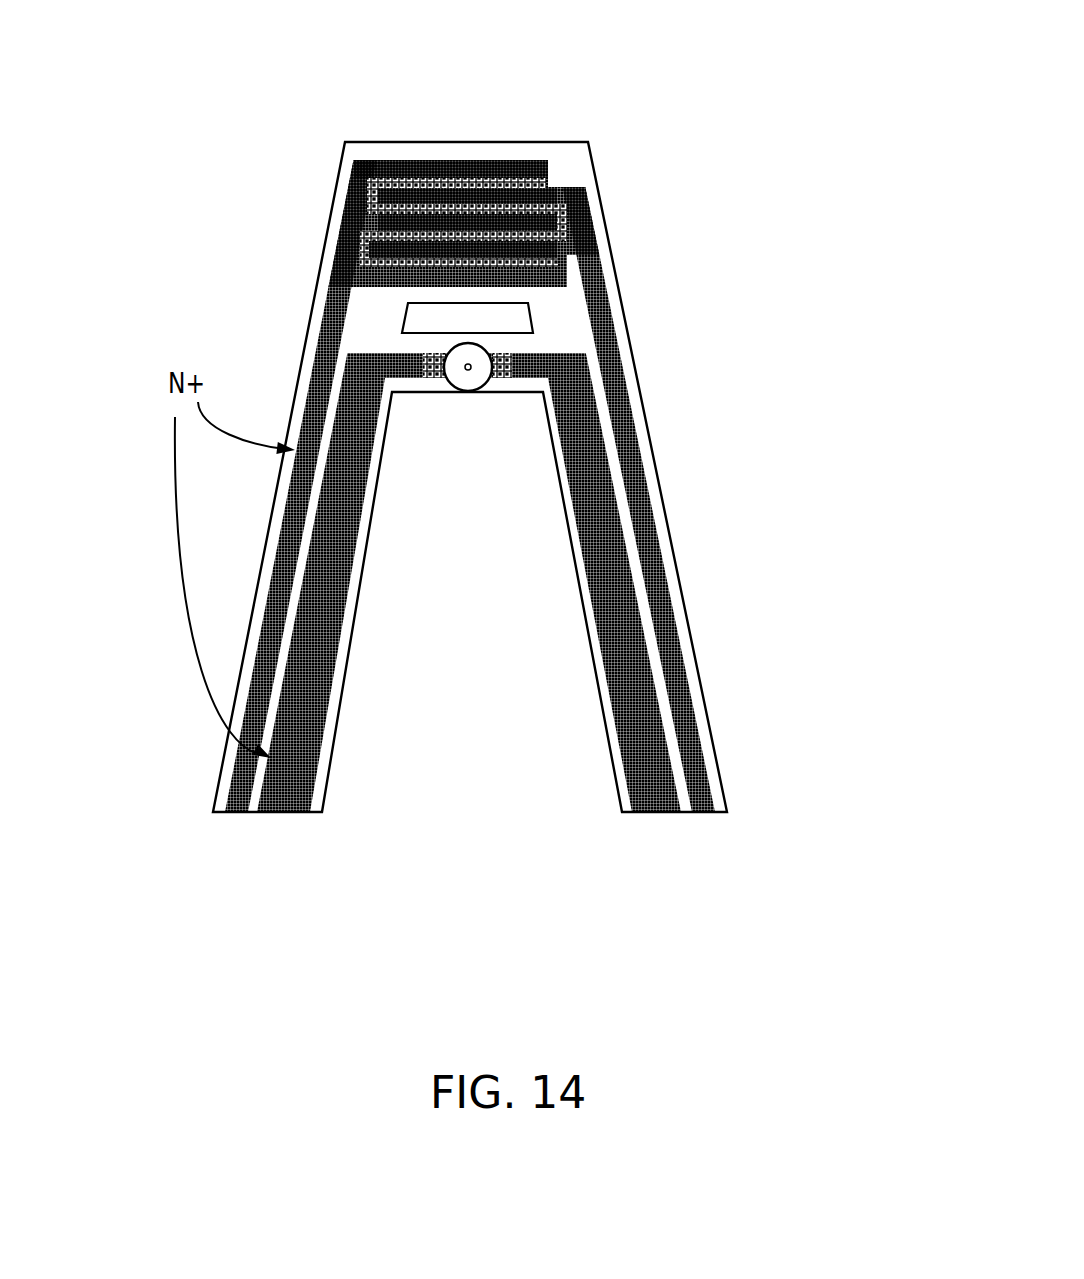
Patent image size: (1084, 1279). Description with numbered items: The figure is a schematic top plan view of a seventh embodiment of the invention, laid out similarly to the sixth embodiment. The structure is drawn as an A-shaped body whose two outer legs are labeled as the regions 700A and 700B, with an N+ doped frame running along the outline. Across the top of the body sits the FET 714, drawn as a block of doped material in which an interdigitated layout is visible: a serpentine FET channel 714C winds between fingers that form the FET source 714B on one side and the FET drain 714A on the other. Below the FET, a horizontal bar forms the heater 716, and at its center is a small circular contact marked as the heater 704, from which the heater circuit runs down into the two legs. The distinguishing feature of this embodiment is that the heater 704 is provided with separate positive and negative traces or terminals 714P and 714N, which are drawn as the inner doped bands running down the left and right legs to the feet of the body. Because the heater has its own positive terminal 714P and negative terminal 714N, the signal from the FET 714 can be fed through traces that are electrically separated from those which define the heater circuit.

The FET 714 is at (640, 129).
The FET channel 714C is at (372, 196).
The FET source 714B is at (552, 222).
The FET drain 714A is at (358, 251).
The heater 716 is at (508, 348).
The heater 704 is at (465, 378).
The first leg 700A is at (222, 772).
The second leg 700B is at (708, 742).
The positive trace or terminal 714P is at (297, 831).
The negative trace or terminal 714N is at (651, 829).